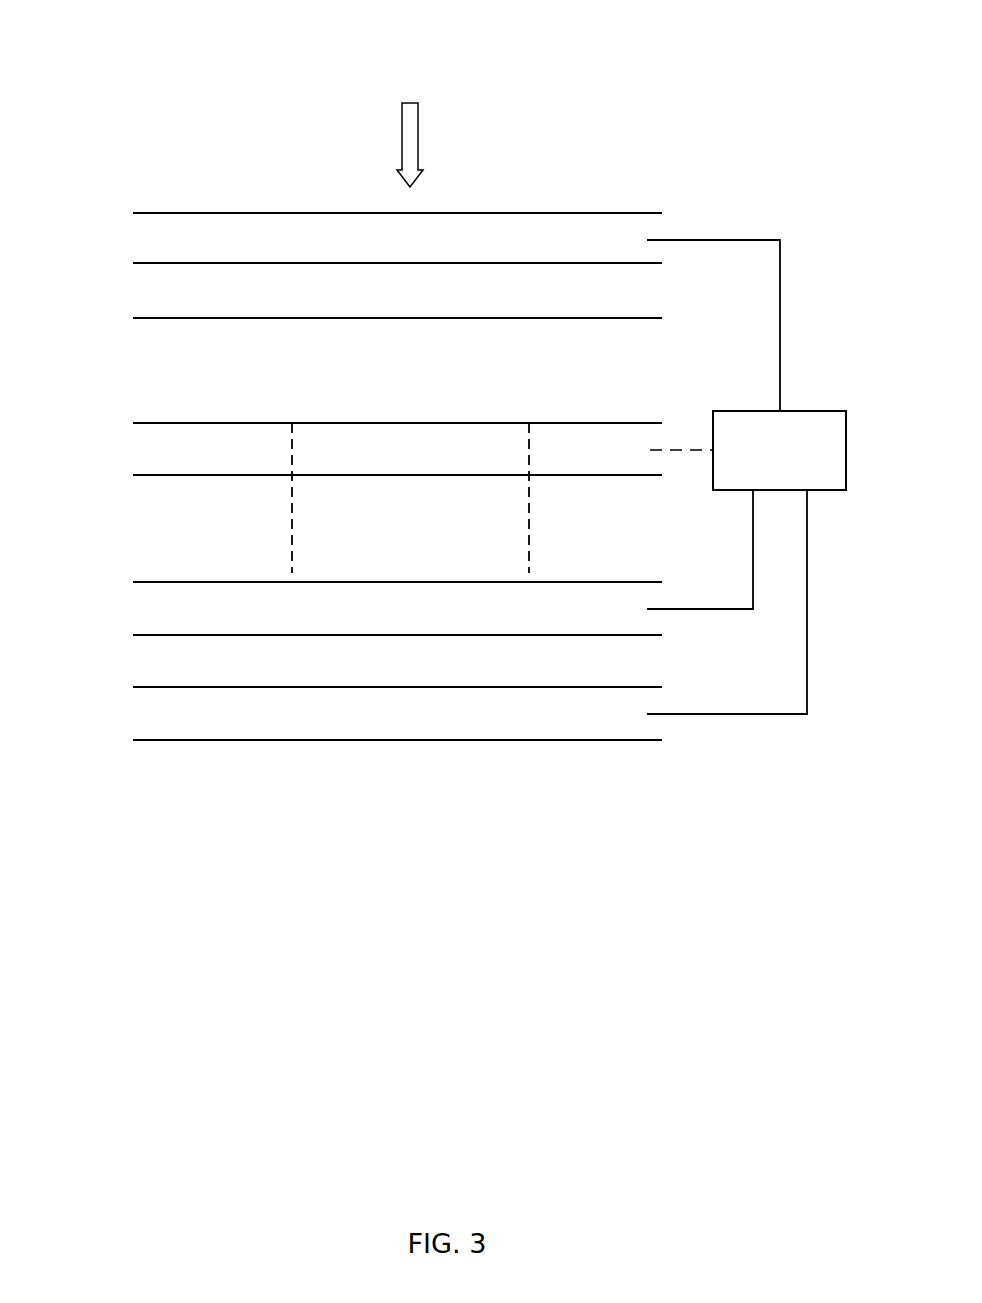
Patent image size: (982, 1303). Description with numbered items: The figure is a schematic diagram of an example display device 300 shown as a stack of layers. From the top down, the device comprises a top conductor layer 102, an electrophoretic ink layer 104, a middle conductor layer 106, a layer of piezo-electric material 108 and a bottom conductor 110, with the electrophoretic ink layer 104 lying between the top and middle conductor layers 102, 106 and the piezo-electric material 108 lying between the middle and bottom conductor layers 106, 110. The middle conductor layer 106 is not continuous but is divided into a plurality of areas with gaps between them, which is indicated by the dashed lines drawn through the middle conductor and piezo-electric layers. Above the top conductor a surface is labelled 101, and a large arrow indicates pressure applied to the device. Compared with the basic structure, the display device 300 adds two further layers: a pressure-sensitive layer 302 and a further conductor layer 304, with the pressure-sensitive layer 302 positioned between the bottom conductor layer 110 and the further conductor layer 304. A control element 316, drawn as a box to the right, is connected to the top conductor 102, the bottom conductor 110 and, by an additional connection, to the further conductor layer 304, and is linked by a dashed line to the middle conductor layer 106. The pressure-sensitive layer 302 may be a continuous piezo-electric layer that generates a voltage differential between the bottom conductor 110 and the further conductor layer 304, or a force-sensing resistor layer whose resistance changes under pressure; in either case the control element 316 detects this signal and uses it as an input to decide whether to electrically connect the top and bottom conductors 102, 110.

The display device 300 is at (648, 95).
The surface 101 is at (147, 242).
The top conductor layer 102 is at (147, 292).
The electrophoretic ink layer 104 is at (147, 372).
The middle conductor layer 106 is at (147, 450).
The layer of piezo-electric material 108 is at (147, 528).
The bottom conductor 110 is at (147, 608).
The pressure-sensitive layer 302 is at (147, 660).
The further conductor layer 304 is at (147, 713).
The control element 316 is at (779, 450).